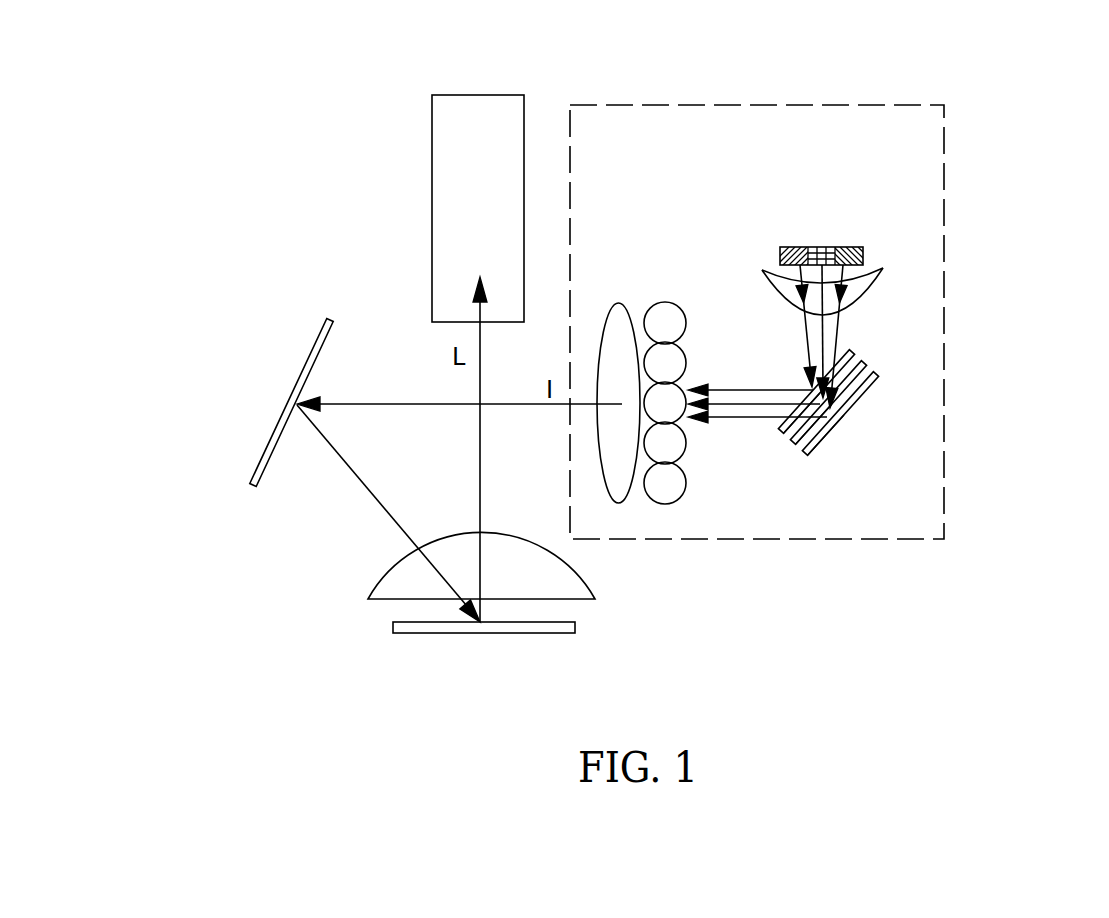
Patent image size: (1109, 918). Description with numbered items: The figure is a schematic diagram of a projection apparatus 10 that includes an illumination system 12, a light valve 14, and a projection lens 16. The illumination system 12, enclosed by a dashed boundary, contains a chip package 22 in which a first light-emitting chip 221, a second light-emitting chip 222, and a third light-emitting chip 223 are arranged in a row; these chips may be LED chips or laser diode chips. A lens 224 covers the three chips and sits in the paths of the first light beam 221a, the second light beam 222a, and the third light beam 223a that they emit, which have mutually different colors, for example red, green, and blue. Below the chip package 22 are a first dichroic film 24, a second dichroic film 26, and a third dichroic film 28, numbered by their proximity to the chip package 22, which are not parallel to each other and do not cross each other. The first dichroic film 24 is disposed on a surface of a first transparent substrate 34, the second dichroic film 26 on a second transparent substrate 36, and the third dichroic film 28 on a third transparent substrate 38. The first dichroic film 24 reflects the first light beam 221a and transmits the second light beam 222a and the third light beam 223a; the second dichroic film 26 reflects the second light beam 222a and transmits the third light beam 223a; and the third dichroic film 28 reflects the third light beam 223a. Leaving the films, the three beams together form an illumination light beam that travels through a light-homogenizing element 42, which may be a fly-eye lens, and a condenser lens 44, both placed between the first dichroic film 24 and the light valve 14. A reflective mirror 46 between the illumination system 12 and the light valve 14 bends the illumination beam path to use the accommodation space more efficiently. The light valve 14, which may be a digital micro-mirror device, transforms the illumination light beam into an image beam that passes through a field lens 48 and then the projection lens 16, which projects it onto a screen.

The projection apparatus 10 is at (230, 123).
The illumination system 12 is at (945, 326).
The light valve 14 is at (393, 625).
The projection lens 16 is at (433, 275).
The chip package 22 is at (835, 212).
The first light-emitting chip 221 is at (800, 247).
The second light-emitting chip 222 is at (820, 247).
The third light-emitting chip 223 is at (865, 231).
The lens 224 is at (777, 268).
The first light beam 221a is at (800, 307).
The second light beam 222a is at (822, 337).
The third light beam 223a is at (840, 322).
The first dichroic film 24 is at (843, 346).
The second dichroic film 26 is at (857, 361).
The third dichroic film 28 is at (868, 377).
The first transparent substrate 34 is at (782, 433).
The second transparent substrate 36 is at (790, 445).
The third transparent substrate 38 is at (818, 437).
The light-homogenizing element 42 is at (655, 302).
The condenser lens 44 is at (615, 303).
The reflective mirror 46 is at (287, 408).
The field lens 48 is at (372, 578).